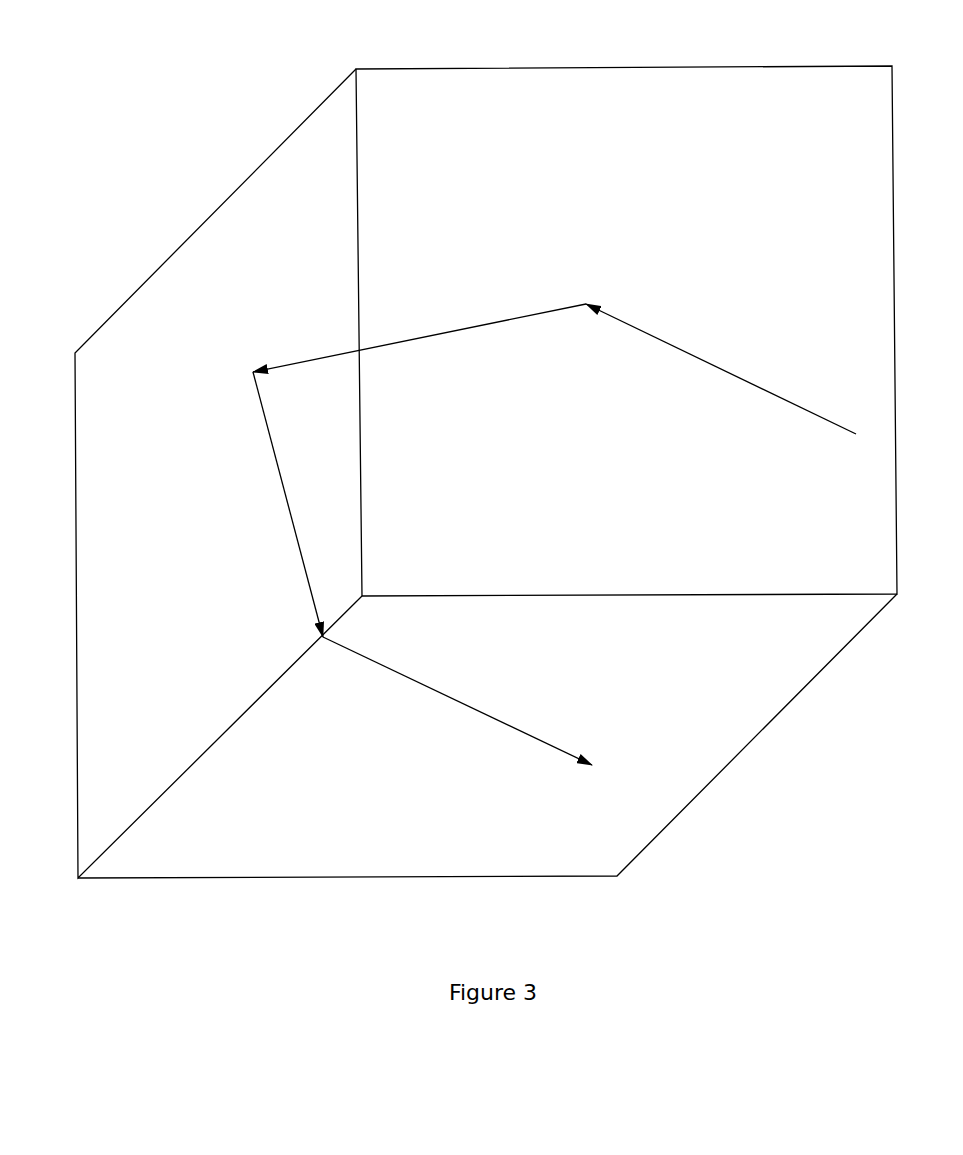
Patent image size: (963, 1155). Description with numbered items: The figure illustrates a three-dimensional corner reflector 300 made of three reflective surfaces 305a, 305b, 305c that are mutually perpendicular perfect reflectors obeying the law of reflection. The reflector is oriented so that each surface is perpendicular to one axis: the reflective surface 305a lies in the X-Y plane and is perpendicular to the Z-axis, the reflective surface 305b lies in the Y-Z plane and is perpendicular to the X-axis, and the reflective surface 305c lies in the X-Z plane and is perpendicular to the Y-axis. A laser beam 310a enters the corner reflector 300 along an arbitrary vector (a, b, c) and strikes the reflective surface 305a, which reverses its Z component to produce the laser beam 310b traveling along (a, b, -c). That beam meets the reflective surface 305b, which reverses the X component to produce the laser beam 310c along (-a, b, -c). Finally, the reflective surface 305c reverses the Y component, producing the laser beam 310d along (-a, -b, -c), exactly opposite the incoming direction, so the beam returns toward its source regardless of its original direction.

The three-dimensional corner reflector 300 is at (472, 465).
The reflective surface 305a is at (378, 212).
The reflective surface 305b is at (90, 590).
The reflective surface 305c is at (315, 855).
The laser beam 310a is at (720, 368).
The laser beam 310b is at (452, 331).
The laser beam 310c is at (282, 490).
The laser beam 310d is at (457, 700).